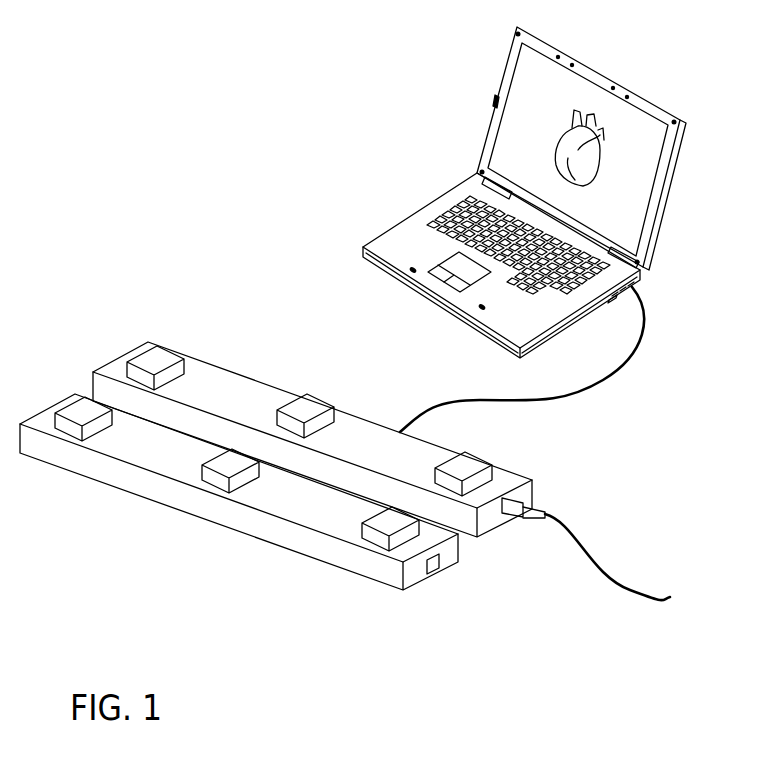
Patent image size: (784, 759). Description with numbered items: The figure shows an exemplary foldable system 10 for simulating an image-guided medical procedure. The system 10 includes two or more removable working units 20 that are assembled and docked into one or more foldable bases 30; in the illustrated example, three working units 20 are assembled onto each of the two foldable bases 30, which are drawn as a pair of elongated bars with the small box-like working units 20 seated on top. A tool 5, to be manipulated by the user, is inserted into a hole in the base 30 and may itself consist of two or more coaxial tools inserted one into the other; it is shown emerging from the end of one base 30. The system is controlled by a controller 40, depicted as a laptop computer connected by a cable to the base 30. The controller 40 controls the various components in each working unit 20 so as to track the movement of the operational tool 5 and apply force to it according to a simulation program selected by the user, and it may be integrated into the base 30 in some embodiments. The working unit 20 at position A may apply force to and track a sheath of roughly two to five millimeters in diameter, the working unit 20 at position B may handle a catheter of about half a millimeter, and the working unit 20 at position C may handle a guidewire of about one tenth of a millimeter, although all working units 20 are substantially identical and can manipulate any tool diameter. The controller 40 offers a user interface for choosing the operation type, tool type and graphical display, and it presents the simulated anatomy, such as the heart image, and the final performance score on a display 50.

The system 10 is at (133, 85).
The working unit 20 is at (172, 350).
The foldable base 30 is at (235, 388).
The controller 40 is at (524, 192).
The display 50 is at (552, 148).
The tool 5 is at (587, 563).
The position A is at (378, 593).
The position B is at (222, 535).
The position C is at (68, 480).